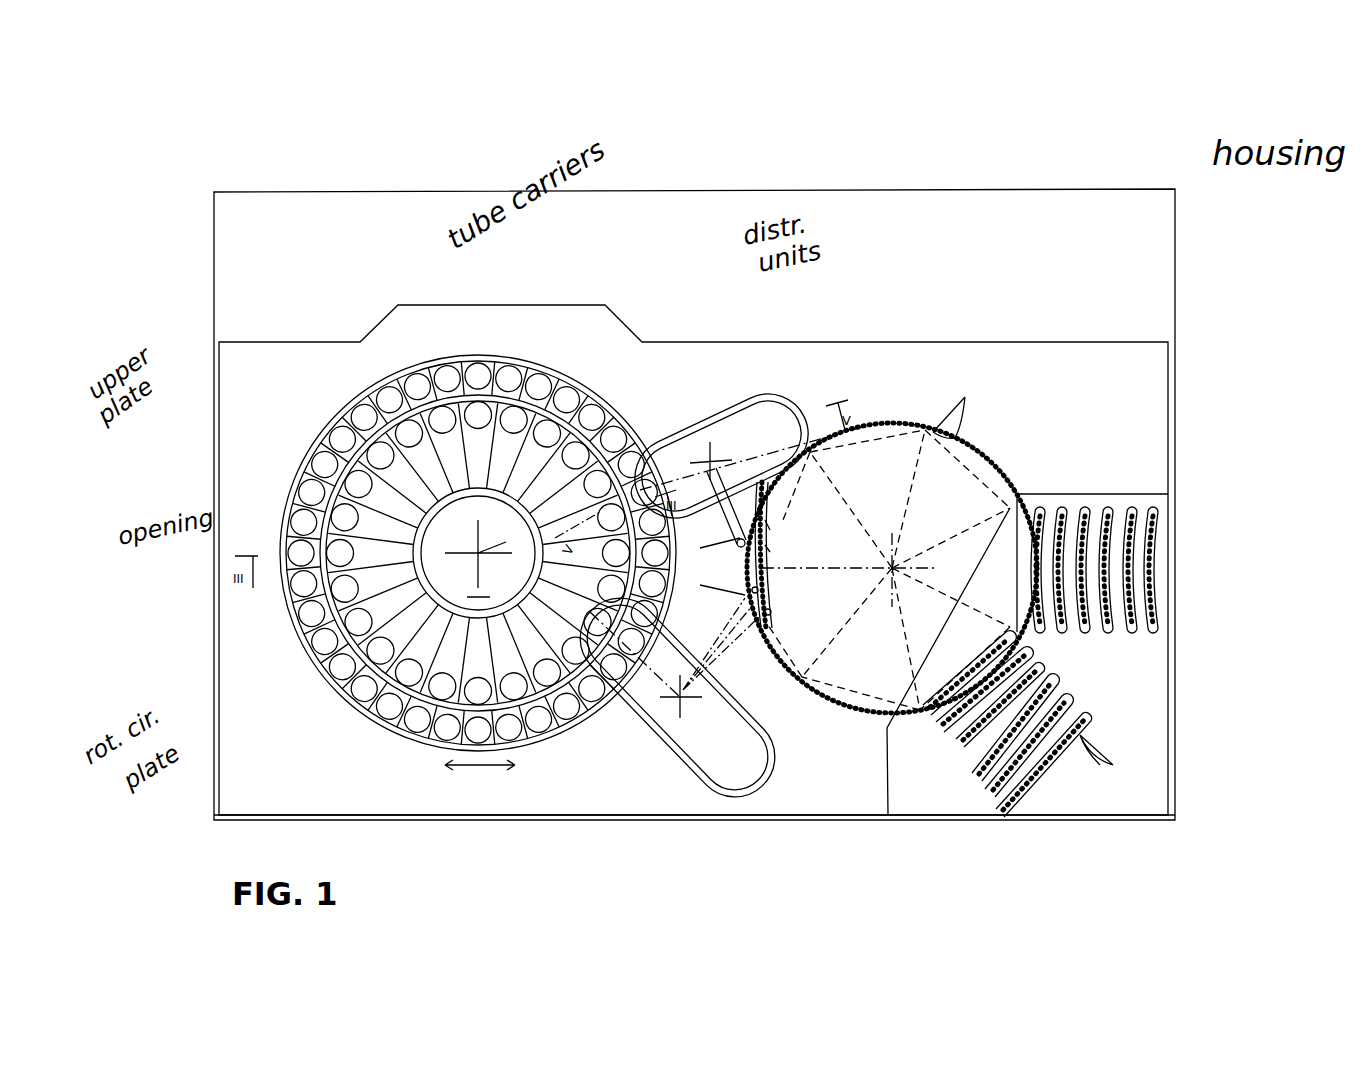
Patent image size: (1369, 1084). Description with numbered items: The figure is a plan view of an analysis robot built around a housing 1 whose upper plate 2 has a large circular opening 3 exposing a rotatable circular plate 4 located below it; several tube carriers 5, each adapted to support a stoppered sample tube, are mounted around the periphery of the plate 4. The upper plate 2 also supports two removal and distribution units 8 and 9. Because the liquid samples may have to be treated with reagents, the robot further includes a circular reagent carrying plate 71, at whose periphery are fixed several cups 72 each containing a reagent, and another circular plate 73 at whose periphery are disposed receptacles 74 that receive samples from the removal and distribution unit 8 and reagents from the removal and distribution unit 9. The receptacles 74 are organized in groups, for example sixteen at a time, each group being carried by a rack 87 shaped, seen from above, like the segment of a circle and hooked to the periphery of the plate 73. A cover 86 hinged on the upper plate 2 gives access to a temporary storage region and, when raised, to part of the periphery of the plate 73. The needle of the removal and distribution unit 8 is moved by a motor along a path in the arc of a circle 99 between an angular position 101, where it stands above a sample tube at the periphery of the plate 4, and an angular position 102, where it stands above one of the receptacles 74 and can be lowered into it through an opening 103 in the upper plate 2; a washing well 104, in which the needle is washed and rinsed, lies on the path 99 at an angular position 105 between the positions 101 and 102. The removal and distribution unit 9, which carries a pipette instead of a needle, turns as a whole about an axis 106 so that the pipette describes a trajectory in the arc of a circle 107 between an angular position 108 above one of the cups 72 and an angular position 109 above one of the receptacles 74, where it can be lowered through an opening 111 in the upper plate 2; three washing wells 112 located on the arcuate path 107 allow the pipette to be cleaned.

The housing 1 is at (1138, 191).
The upper plate 2 is at (233, 373).
The circular opening 3 is at (290, 507).
The rotatable circular plate 4 is at (307, 662).
The tube carriers 5 is at (483, 355).
The removal and distribution unit 8 is at (722, 405).
The removal and distribution unit 9 is at (677, 775).
The reagent carrying plate 71 is at (318, 585).
The cups 72 is at (317, 456).
The plate 73 is at (990, 447).
The receptacles 74 is at (1034, 578).
The cover 86 is at (882, 815).
The rack 87 is at (1027, 577).
The path in the arc of a circle 99 is at (705, 549).
The angular position 101 is at (694, 436).
The angular position 102 is at (730, 487).
The opening 103 is at (772, 525).
The washing well 104 is at (773, 547).
The angular position 105 is at (770, 495).
The axis 106 is at (652, 728).
The trajectory in the arc of a circle 107 is at (701, 586).
The angular position 108 is at (625, 698).
The angular position 109 is at (737, 650).
The opening 111 is at (772, 612).
The washing wells 112 is at (762, 590).